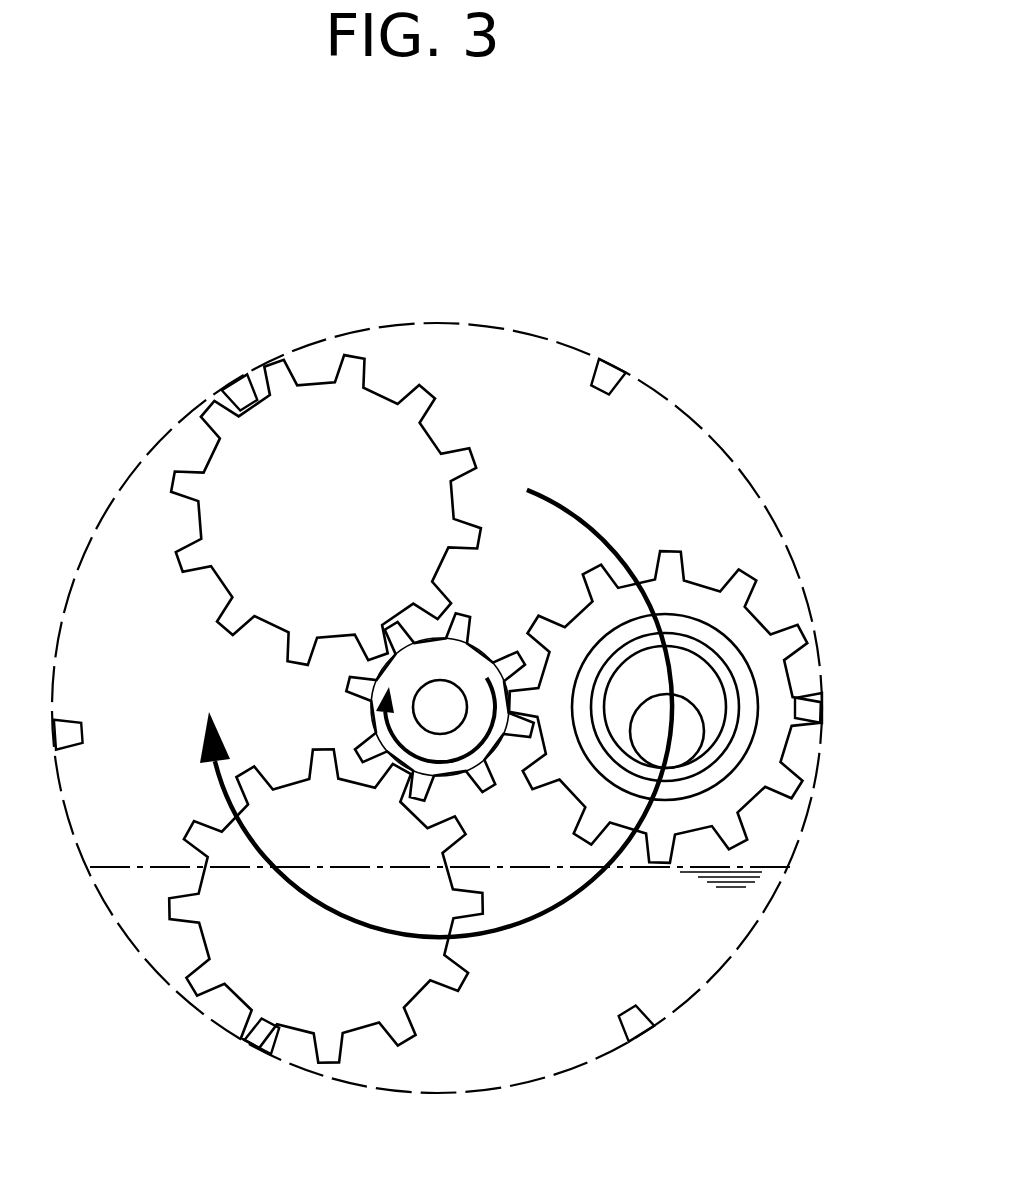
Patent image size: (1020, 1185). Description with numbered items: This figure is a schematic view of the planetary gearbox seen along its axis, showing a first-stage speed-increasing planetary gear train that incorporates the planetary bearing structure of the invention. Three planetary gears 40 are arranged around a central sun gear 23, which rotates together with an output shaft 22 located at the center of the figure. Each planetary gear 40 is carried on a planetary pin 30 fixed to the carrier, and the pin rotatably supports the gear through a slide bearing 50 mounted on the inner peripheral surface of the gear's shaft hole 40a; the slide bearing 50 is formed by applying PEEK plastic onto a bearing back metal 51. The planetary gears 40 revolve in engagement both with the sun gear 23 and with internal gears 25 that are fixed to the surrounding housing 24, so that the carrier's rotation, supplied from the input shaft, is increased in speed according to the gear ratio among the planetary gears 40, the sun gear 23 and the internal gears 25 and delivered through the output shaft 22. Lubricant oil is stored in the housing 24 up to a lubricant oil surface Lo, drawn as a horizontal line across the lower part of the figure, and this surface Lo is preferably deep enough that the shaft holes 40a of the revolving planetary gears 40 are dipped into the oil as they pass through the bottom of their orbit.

The output shaft 22 is at (447, 692).
The sun gear 23 is at (378, 718).
The housing 24 is at (495, 322).
The internal gear 25 is at (608, 384).
The planetary pin 30 is at (687, 733).
The planetary gear 40 is at (312, 397).
The shaft hole 40a is at (686, 619).
The slide bearing 50 is at (718, 662).
The bearing back metal 51 is at (750, 710).
The lubricant oil surface Lo is at (128, 866).